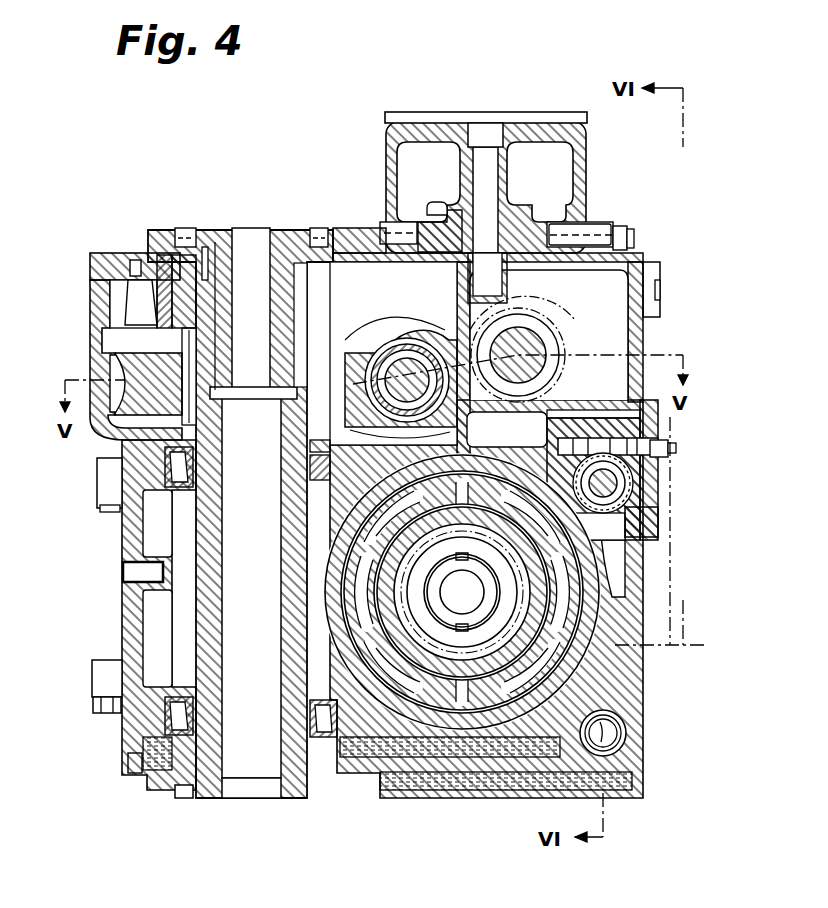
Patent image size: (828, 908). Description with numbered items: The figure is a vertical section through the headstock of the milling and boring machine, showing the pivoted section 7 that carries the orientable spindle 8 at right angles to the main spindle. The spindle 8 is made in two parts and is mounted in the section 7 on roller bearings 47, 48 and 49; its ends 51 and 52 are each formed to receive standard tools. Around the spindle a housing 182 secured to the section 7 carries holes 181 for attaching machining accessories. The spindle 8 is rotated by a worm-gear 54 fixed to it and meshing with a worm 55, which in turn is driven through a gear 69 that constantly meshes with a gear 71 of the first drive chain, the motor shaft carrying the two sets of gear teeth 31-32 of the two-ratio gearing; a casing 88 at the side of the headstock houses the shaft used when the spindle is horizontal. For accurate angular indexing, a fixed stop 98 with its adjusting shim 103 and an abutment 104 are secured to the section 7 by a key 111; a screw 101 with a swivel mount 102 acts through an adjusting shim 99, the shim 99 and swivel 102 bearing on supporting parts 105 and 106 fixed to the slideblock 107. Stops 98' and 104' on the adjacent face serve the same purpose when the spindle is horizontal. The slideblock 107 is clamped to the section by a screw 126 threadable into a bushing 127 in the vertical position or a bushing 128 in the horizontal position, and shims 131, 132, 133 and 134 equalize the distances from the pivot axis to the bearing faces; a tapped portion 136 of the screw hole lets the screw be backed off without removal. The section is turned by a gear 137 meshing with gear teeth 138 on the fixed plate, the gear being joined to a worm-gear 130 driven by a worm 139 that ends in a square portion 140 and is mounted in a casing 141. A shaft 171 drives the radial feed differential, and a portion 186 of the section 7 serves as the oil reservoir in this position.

The pivoted section 7 is at (100, 440).
The orientable spindle 8 is at (213, 760).
The sets of gear teeth 31-32 is at (545, 335).
The roller bearing 47 is at (188, 707).
The roller bearing 48 is at (170, 468).
The roller bearing 49 is at (128, 300).
The spindle end 51 is at (188, 800).
The spindle end 52 is at (200, 232).
The worm-gear 54 is at (125, 372).
The worm 55 is at (414, 403).
The gear 69 is at (388, 436).
The gear 71 is at (565, 342).
The casing 88 is at (664, 432).
The fixed stop 98 is at (348, 220).
The stop 98' is at (93, 519).
The adjusting shim 99 is at (410, 240).
The screw 101 is at (632, 241).
The swivel mount 102 is at (556, 236).
The adjusting shim 103 is at (617, 229).
The abutment 104 is at (591, 207).
The stop 104' is at (94, 705).
The supporting part 105 is at (428, 182).
The supporting part 106 is at (560, 200).
The slideblock 107 is at (512, 128).
The key 111 is at (643, 243).
The screw 126 is at (478, 124).
The bushing 127 is at (482, 275).
The bushing 128 is at (125, 586).
The worm-gear 130 is at (640, 490).
The shim 131 is at (452, 252).
The shim 132 is at (512, 282).
The shim 133 is at (125, 609).
The shim 134 is at (143, 546).
The tapped hole portion 136 is at (500, 195).
The gear 137 is at (645, 508).
The gear teeth 138 is at (602, 670).
The worm 139 is at (600, 440).
The square portion 140 is at (672, 456).
The casing 141 is at (648, 404).
The shaft 171 is at (628, 732).
The holes 181 is at (136, 258).
The housing 182 is at (128, 253).
The oil reservoir portion 186 is at (508, 790).